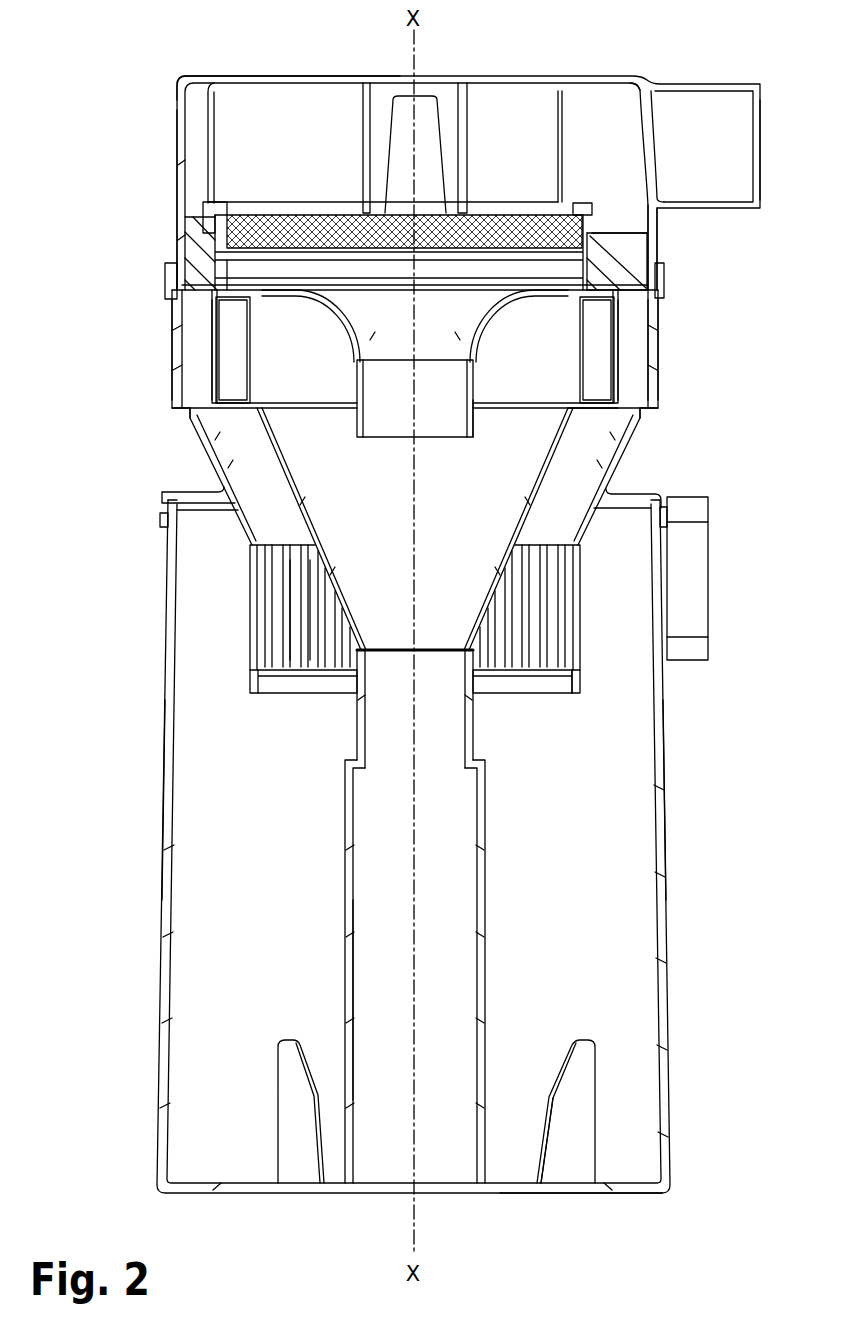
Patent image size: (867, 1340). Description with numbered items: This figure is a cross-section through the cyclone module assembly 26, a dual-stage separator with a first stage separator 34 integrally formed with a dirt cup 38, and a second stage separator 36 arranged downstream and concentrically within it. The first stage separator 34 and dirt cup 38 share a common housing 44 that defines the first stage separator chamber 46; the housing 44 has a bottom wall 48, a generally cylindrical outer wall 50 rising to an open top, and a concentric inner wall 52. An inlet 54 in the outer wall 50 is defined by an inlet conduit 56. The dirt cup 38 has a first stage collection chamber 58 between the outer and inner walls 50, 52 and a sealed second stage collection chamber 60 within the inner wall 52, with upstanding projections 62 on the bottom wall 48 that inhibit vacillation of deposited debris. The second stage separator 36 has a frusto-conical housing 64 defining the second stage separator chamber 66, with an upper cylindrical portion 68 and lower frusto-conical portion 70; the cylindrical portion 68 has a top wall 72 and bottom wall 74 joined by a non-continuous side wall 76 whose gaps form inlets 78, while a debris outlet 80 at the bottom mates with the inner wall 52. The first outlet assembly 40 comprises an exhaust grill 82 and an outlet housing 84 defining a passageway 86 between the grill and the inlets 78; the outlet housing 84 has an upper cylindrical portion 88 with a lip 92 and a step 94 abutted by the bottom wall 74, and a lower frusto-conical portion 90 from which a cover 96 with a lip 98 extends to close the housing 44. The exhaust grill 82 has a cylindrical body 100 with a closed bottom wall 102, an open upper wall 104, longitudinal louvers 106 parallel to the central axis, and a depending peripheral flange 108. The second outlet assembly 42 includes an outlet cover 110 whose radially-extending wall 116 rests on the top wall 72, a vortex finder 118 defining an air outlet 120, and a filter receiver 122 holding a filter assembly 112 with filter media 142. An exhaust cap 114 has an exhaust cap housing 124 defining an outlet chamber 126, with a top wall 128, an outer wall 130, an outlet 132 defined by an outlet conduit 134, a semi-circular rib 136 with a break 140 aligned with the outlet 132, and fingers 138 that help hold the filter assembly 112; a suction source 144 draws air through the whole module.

The cyclone module assembly 26 is at (39, 66).
The first stage separator 34 is at (142, 540).
The second stage separator 36 is at (198, 364).
The dirt cup 38 is at (143, 963).
The first outlet assembly 40 is at (183, 452).
The second outlet assembly 42 is at (163, 163).
The housing 44 is at (168, 800).
The first stage separator chamber 46 is at (209, 620).
The bottom wall 48 is at (646, 1182).
The outer wall 50 is at (670, 975).
The inner wall 52 is at (482, 910).
The inlet 54 is at (676, 598).
The inlet conduit 56 is at (686, 501).
The first stage collection chamber 58 is at (509, 1126).
The second stage collection chamber 60 is at (374, 1066).
The projection 62 is at (288, 1145).
The housing 64 is at (207, 382).
The second stage separator chamber 66 is at (522, 370).
The upper cylindrical portion 68 is at (634, 324).
The lower frusto-conical portion 70 is at (580, 458).
The top wall 72 is at (625, 286).
The bottom wall 74 is at (608, 410).
The side wall 76 is at (618, 377).
The inlet 78 is at (228, 334).
The debris outlet 80 is at (379, 640).
The exhaust grill 82 is at (236, 568).
The outlet housing 84 is at (668, 395).
The passageway 86 is at (243, 501).
The upper cylindrical portion 88 is at (168, 338).
The lower frusto-conical portion 90 is at (190, 424).
The lip 92 is at (165, 278).
The step 94 is at (652, 428).
The cover 96 is at (180, 490).
The lip 98 is at (158, 509).
The cylindrical body 100 is at (575, 616).
The bottom wall 102 is at (520, 672).
The upper wall 104 is at (558, 545).
The louvers 106 is at (338, 657).
The peripheral flange 108 is at (577, 682).
The outlet cover 110 is at (658, 252).
The filter assembly 112 is at (235, 203).
The exhaust cap 114 is at (174, 72).
The radially-extending wall 116 is at (664, 292).
The vortex finder 118 is at (477, 420).
The air outlet 120 is at (380, 410).
The filter receiver 122 is at (195, 240).
The exhaust cap housing 124 is at (634, 72).
The outlet chamber 126 is at (271, 160).
The top wall 128 is at (294, 74).
The outer wall 130 is at (177, 118).
The outlet 132 is at (698, 138).
The outlet conduit 134 is at (703, 78).
The rib 136 is at (216, 128).
The fingers 138 is at (362, 125).
The break 140 is at (565, 112).
The filter media 142 is at (522, 212).
The suction source 144 is at (630, 226).